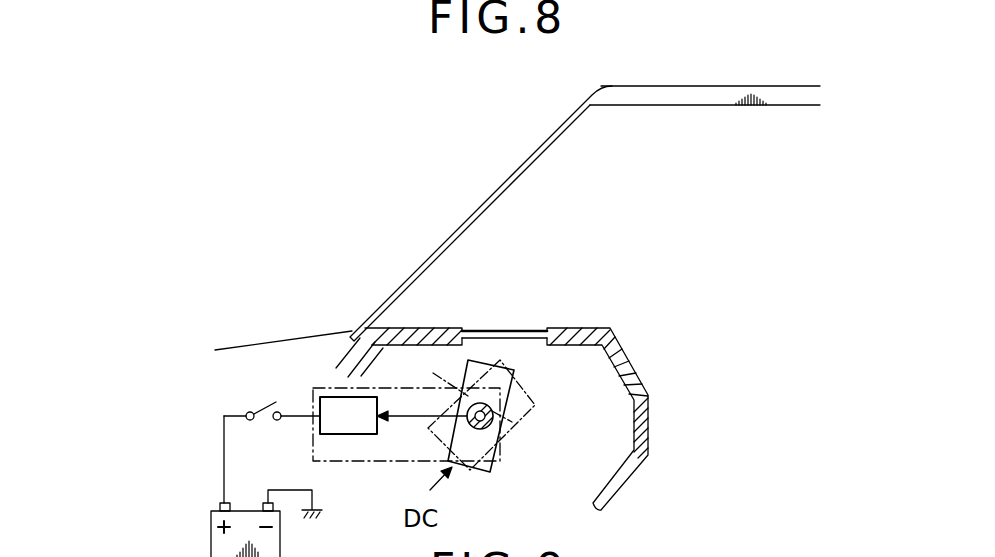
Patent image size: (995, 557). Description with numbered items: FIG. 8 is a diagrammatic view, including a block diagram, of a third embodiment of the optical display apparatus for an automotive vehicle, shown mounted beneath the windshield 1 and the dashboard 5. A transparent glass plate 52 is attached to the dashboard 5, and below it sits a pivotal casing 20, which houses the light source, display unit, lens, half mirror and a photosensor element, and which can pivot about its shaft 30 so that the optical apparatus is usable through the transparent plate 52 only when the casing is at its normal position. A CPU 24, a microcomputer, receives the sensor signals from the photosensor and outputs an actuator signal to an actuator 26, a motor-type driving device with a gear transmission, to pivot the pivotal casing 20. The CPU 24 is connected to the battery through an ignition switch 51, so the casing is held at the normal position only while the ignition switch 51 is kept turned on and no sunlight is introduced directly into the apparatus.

The windshield 1 is at (529, 158).
The dashboard 5 is at (597, 330).
The transparent plate 52 is at (524, 328).
The pivotal casing 20 is at (468, 360).
The actuator 26 is at (458, 412).
The CPU 24 is at (379, 431).
The shaft 30 is at (502, 415).
The ignition switch 51 is at (262, 408).